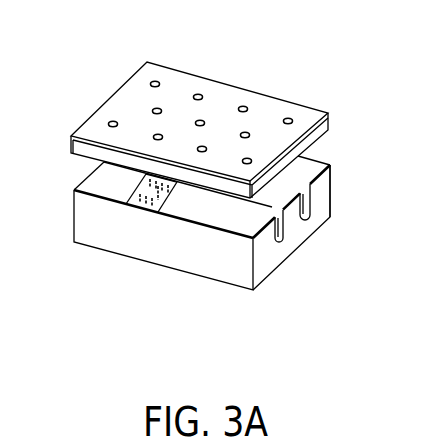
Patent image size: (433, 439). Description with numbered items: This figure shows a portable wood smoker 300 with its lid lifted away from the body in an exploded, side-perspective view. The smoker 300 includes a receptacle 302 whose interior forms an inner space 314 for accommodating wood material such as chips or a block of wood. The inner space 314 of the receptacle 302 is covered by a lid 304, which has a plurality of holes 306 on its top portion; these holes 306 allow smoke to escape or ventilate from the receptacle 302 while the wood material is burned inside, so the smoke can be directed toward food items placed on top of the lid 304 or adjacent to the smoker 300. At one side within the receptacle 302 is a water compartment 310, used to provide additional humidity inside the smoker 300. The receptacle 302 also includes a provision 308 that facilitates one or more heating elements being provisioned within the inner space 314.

The portable wood smoker 300 is at (78, 329).
The receptacle 302 is at (172, 247).
The lid 304 is at (118, 106).
The holes 306 is at (288, 119).
The provision 308 is at (313, 195).
The water compartment 310 is at (126, 196).
The inner space 314 is at (330, 167).